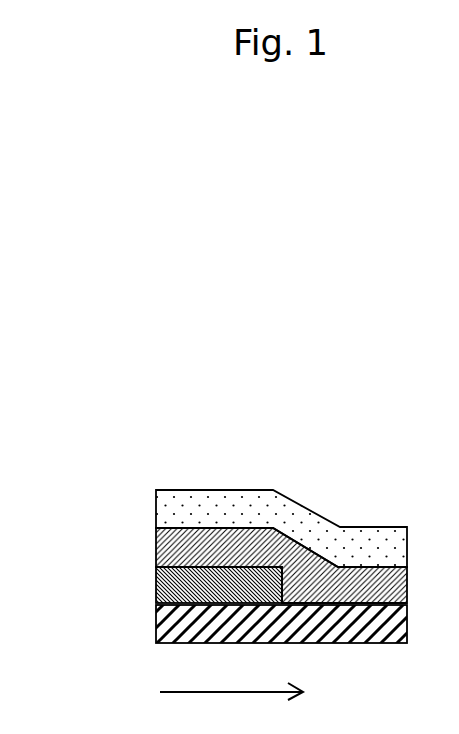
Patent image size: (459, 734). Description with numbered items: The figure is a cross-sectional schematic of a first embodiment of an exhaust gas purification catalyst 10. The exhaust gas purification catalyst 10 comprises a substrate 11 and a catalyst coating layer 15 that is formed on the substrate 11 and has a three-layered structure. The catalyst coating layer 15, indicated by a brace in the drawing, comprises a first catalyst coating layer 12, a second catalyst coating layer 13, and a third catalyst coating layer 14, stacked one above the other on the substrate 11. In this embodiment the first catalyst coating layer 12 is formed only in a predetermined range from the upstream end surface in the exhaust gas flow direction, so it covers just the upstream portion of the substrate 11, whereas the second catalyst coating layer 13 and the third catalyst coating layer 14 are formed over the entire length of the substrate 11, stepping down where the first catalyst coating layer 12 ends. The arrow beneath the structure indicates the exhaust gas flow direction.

The exhaust gas purification catalyst 10 is at (153, 463).
The substrate 11 is at (167, 624).
The first catalyst coating layer 12 is at (167, 586).
The second catalyst coating layer 13 is at (167, 548).
The third catalyst coating layer 14 is at (167, 511).
The catalyst coating layer 15 is at (78, 497).